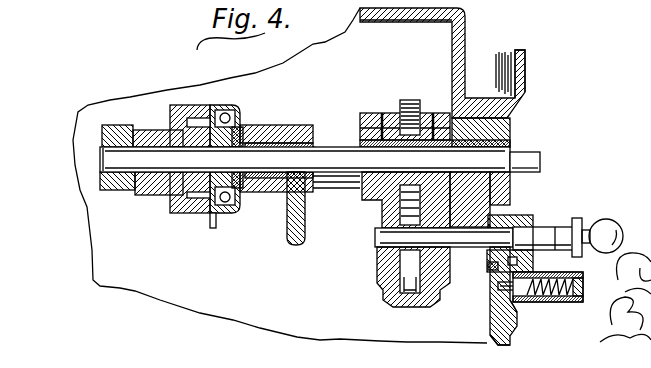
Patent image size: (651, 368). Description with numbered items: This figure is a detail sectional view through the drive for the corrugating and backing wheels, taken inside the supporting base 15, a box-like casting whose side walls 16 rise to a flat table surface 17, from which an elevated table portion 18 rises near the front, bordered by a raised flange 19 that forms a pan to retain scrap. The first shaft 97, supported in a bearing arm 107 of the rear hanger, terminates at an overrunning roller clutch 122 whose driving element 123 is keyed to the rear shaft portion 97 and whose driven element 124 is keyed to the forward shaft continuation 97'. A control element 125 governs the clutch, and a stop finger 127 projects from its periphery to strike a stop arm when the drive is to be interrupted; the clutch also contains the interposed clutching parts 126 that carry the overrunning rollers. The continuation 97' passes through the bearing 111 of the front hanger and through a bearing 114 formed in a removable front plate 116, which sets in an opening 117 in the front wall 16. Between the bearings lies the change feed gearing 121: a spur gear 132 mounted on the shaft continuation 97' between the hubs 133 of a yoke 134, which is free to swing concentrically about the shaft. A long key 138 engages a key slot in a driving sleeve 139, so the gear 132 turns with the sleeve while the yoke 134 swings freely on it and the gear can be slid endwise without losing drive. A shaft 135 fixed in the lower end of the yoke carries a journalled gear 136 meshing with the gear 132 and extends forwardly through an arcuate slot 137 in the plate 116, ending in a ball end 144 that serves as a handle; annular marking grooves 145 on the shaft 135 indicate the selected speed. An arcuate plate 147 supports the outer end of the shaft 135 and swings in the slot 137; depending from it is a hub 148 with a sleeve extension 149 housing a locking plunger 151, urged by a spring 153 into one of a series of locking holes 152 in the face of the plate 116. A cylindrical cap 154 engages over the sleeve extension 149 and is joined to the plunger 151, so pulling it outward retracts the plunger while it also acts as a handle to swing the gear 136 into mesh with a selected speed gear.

The supporting base 15 is at (233, 320).
The side walls 16 is at (500, 340).
The flat table surface 17 is at (503, 97).
The elevated table portion 18 is at (466, 16).
The raised flange 19 is at (526, 50).
The first shaft 97 is at (276, 159).
The shaft continuation 97' is at (281, 205).
The bearing arm 107 is at (100, 182).
The bearing 111 is at (282, 128).
The bearing 114 is at (509, 128).
The removable front plate 116 is at (495, 305).
The opening 117 is at (497, 313).
The change feed gearing 121 is at (410, 99).
The clutch 122 is at (175, 221).
The driving element 123 is at (162, 186).
The driven element 124 is at (245, 119).
The control element 125 is at (204, 116).
The ball bearing 126 is at (228, 104).
The stop finger 127 is at (212, 228).
The spur gear 132 is at (399, 104).
The hubs 133 is at (433, 124).
The yoke 134 is at (380, 210).
The shaft 135 is at (437, 245).
The gear 136 is at (383, 284).
The arcuate slot 137 is at (508, 216).
The long key 138 is at (321, 147).
The driving sleeve 139 is at (360, 172).
The ball end 144 is at (606, 219).
The annular marking grooves 145 is at (533, 228).
The arcuate plate 147 is at (548, 212).
The hub 148 is at (534, 265).
The sleeve extension 149 is at (580, 302).
The locking plunger 151 is at (499, 286).
The locking holes 152 is at (497, 284).
The spring 153 is at (568, 275).
The cylindrical cap 154 is at (578, 288).